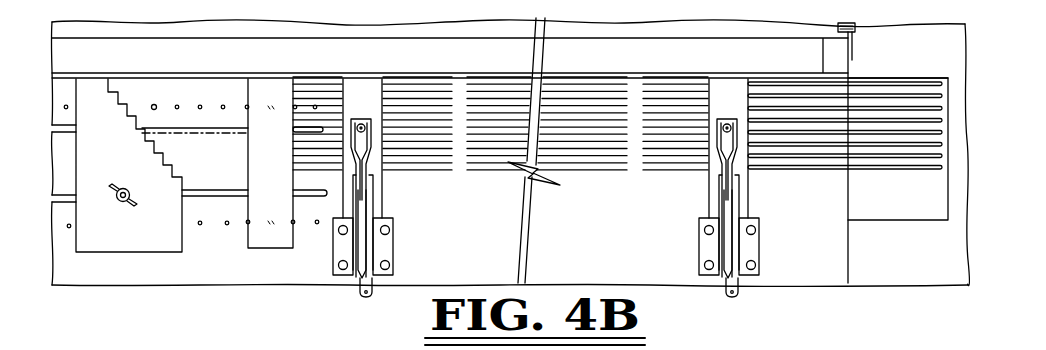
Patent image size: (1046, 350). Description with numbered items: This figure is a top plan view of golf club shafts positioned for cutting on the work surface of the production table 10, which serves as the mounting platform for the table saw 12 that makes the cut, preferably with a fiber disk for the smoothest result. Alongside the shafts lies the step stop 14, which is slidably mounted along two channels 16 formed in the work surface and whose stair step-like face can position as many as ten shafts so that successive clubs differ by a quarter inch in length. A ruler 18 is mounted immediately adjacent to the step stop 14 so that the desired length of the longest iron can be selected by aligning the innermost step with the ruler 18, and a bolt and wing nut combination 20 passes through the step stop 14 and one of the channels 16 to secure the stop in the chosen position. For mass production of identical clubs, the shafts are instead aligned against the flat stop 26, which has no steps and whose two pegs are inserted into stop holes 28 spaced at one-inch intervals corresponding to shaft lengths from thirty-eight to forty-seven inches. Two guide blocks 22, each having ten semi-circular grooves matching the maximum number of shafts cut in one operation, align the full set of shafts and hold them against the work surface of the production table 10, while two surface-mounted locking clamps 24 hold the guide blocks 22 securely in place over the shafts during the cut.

The production table 10 is at (565, 234).
The table saw 12 is at (857, 31).
The step stop 14 is at (143, 233).
The channels 16 is at (270, 163).
The ruler 18 is at (474, 64).
The bolt and wing nut combination 20 is at (122, 188).
The guide blocks 22 is at (381, 189).
The locking clamps 24 is at (378, 240).
The flat stop 26 is at (279, 245).
The stop holes 28 is at (151, 104).